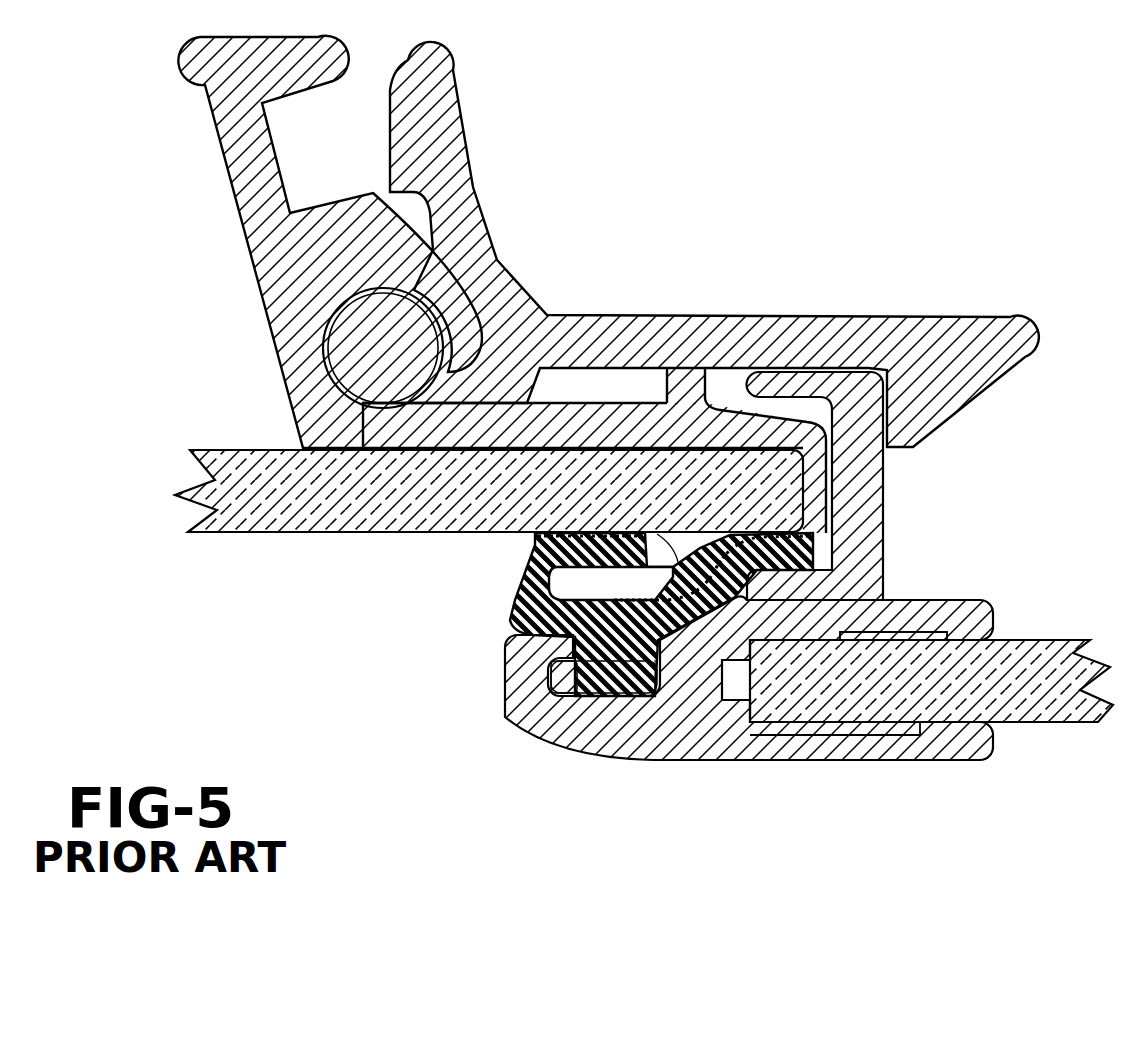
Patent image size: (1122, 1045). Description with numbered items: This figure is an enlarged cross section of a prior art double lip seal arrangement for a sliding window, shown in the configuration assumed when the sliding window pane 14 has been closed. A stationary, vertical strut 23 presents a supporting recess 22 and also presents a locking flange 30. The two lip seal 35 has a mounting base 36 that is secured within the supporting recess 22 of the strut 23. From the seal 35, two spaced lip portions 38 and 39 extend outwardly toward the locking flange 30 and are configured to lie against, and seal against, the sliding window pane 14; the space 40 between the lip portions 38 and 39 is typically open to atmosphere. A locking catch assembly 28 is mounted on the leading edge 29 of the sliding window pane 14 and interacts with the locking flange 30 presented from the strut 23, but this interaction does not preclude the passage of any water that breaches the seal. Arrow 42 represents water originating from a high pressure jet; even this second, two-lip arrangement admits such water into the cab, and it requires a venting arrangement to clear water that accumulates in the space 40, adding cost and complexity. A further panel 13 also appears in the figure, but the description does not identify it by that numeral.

The glass panel 13 is at (1065, 668).
The sliding window pane 14 is at (258, 508).
The supporting recess 22 is at (598, 700).
The vertical strut 23 is at (808, 770).
The locking catch assembly 28 is at (546, 281).
The leading edge 29 is at (808, 512).
The locking flange 30 is at (857, 476).
The two lip seal 35 is at (503, 620).
The mounting base 36 is at (570, 682).
The lip portion 38 is at (662, 558).
The lip portion 39 is at (838, 566).
The space 40 is at (580, 589).
The arrow 42 is at (520, 541).